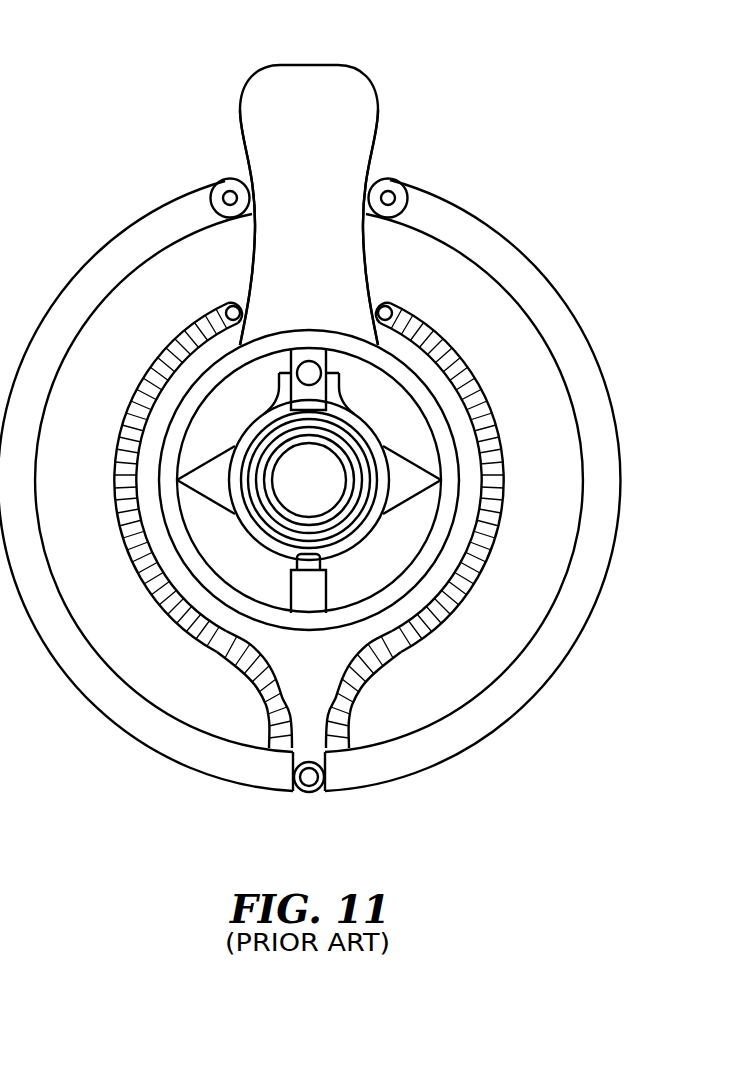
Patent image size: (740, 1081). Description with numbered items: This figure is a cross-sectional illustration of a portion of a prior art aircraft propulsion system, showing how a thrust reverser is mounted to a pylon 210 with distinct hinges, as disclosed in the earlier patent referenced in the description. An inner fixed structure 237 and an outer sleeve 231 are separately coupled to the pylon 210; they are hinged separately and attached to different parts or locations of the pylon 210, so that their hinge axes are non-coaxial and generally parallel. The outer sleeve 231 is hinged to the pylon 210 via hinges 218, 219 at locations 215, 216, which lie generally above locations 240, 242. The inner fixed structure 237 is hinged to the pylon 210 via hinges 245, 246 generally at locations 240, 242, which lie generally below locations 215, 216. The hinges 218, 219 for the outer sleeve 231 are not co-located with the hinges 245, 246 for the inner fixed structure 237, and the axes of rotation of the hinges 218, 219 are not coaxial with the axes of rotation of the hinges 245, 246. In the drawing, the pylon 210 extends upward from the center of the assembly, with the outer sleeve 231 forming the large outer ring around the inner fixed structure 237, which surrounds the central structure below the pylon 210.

The pylon 210 is at (377, 110).
The location 215 is at (370, 175).
The location 216 is at (248, 175).
The hinge 218 is at (389, 198).
The hinge 219 is at (228, 196).
The outer sleeve 231 is at (540, 692).
The inner fixed structure 237 is at (407, 650).
The location 240 is at (385, 310).
The location 242 is at (233, 310).
The hinge 245 is at (215, 293).
The hinge 246 is at (403, 293).